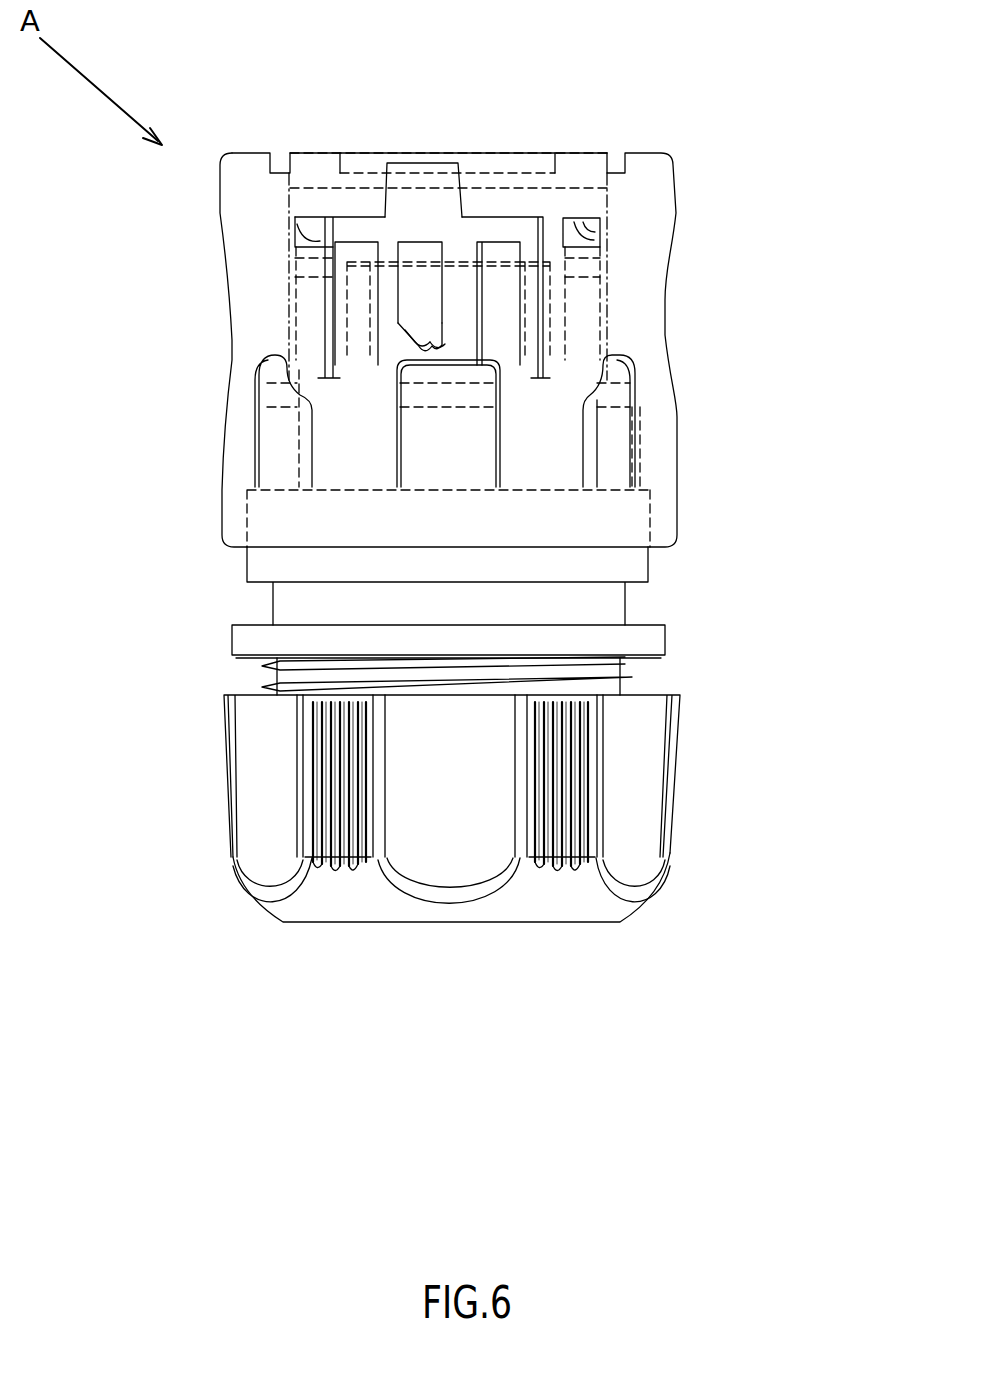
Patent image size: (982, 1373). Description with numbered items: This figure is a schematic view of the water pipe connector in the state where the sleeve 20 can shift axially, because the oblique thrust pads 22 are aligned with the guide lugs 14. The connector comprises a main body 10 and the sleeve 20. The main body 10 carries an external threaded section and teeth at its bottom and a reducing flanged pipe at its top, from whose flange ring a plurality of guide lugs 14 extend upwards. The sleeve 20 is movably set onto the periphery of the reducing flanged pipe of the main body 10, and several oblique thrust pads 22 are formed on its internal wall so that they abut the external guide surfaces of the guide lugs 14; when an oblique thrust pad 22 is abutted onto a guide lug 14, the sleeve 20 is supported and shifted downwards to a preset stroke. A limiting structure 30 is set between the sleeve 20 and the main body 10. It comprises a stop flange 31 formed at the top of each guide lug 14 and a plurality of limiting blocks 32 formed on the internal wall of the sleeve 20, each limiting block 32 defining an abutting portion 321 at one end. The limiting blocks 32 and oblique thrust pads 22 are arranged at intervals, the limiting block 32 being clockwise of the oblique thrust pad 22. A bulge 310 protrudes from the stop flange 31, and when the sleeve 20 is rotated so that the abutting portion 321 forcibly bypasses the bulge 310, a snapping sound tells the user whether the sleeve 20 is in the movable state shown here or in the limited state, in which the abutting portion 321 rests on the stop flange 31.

The main body 10 is at (694, 598).
The guide lug 14 is at (423, 462).
The sleeve 20 is at (668, 363).
The oblique thrust pad 22 is at (462, 338).
The limiting structure 30 is at (325, 324).
The stop flange 31 is at (432, 360).
The limiting block 32 is at (390, 300).
The bulge 310 is at (433, 355).
The abutting portion 321 is at (388, 352).